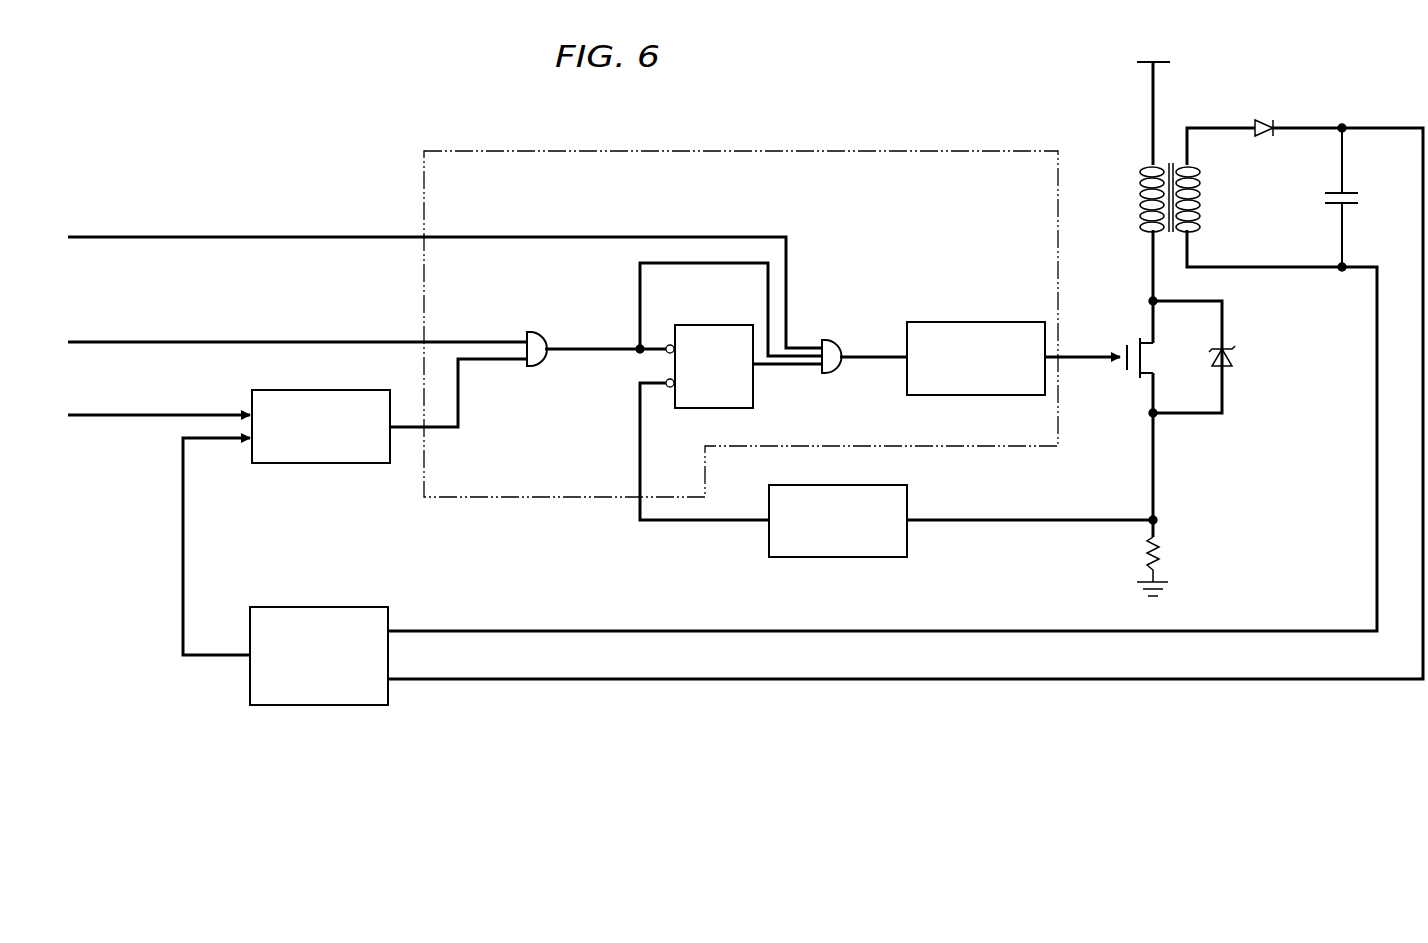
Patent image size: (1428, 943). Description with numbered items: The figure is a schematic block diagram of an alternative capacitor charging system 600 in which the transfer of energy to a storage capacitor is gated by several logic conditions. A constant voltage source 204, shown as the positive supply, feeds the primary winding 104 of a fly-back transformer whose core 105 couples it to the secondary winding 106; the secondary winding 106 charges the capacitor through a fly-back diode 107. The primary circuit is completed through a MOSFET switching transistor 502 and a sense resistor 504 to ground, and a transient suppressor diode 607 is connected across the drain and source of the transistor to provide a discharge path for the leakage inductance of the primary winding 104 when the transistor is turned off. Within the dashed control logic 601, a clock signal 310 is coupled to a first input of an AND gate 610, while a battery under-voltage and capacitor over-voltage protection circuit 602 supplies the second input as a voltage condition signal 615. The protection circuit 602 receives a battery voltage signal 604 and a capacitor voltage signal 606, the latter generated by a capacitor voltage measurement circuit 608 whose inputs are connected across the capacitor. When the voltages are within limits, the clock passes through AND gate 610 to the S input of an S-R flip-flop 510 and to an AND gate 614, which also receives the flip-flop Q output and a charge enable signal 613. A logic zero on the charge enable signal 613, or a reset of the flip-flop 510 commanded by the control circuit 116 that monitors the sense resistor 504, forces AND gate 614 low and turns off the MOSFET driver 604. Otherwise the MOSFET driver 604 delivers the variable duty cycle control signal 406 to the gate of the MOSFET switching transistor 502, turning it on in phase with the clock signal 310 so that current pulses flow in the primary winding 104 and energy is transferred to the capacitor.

The capacitor charging system 600 is at (1073, 727).
The control logic 601 is at (647, 150).
The charge enable signal 613 is at (270, 232).
The clock signal 310 is at (270, 338).
The battery voltage signal / MOSFET driver 604 is at (203, 410).
The protection circuit 602 is at (350, 467).
The capacitor voltage signal 606 is at (183, 577).
The capacitor voltage measurement circuit 608 is at (352, 605).
The voltage condition signal 615 is at (458, 385).
The AND gate 610 is at (532, 330).
The S-R flip-flop 510 is at (705, 323).
The AND gate 614 is at (828, 340).
The control circuit 116 is at (838, 560).
The variable duty cycle control signal 406 is at (1085, 353).
The MOSFET switching transistor 502 is at (1120, 363).
The transient suppressor diode 607 is at (1235, 350).
The sense resistor 504 is at (1165, 553).
The constant voltage source 204 is at (1168, 40).
The primary winding 104 is at (1142, 193).
The core 105 is at (1160, 163).
The secondary winding 106 is at (1193, 200).
The fly-back diode 107 is at (1258, 120).